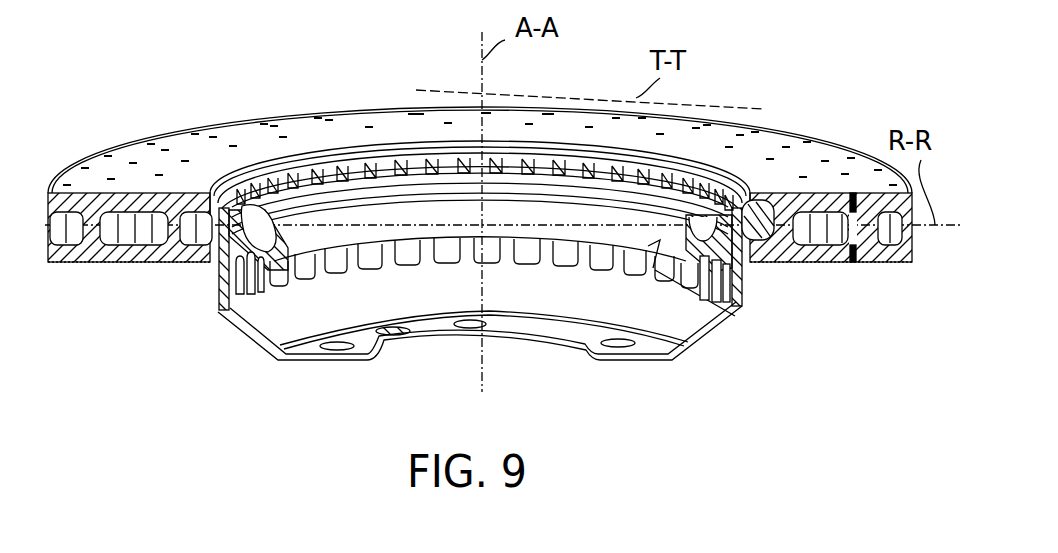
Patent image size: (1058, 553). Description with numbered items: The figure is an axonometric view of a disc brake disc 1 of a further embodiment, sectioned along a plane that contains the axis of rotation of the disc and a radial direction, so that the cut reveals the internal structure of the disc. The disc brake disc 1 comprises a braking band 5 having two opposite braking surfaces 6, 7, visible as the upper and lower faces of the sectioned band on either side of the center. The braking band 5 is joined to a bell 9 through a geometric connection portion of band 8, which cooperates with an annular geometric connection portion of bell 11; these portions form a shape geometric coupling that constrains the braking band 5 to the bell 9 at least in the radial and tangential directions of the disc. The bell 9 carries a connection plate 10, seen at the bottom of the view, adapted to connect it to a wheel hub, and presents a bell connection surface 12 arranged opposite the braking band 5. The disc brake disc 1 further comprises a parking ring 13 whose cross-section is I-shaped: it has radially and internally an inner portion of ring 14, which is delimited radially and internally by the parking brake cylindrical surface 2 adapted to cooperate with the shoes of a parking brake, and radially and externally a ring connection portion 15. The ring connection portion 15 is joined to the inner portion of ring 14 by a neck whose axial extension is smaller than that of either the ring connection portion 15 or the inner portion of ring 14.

The disc brake disc 1 is at (745, 78).
The parking brake cylindrical surface 2 is at (700, 295).
The braking band 5 is at (145, 168).
The braking surface 6 is at (195, 155).
The braking surface 7 is at (138, 265).
The geometric connection portion of band 8 is at (750, 255).
The bell 9 is at (267, 315).
The connection plate 10 is at (436, 337).
The geometric connection portion of bell 11 is at (225, 272).
The bell connection surface 12 is at (232, 303).
The parking ring 13 is at (260, 228).
The inner portion of ring 14 is at (284, 265).
The ring connection portion 15 is at (255, 228).